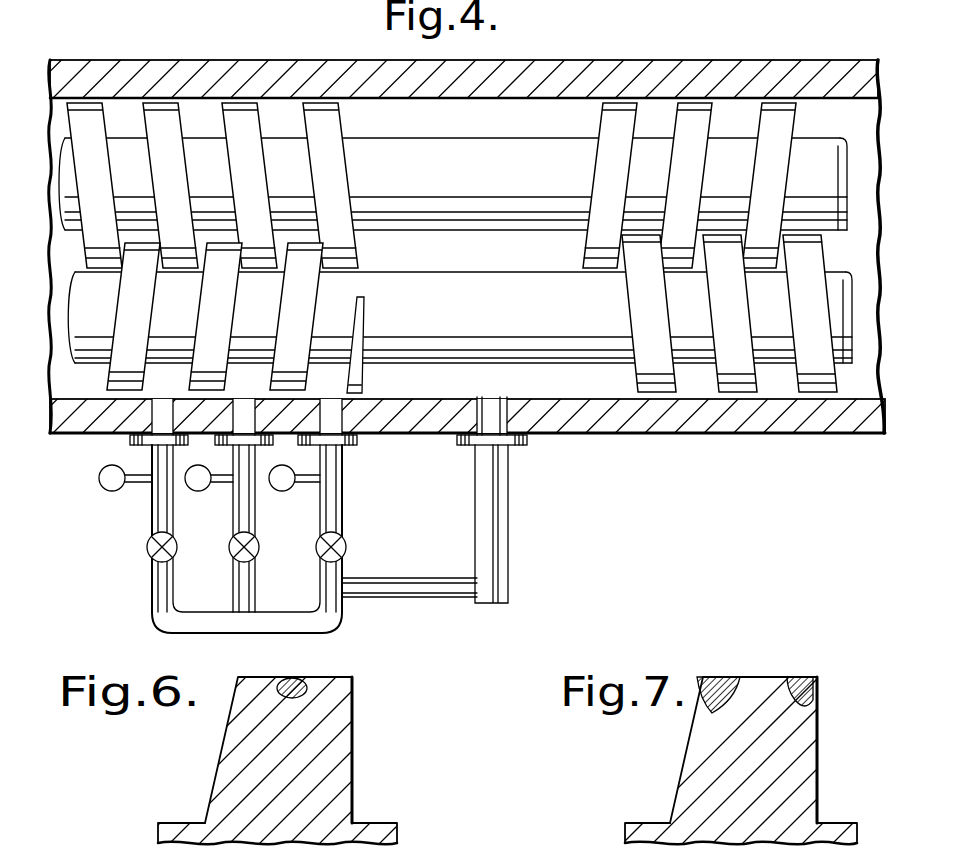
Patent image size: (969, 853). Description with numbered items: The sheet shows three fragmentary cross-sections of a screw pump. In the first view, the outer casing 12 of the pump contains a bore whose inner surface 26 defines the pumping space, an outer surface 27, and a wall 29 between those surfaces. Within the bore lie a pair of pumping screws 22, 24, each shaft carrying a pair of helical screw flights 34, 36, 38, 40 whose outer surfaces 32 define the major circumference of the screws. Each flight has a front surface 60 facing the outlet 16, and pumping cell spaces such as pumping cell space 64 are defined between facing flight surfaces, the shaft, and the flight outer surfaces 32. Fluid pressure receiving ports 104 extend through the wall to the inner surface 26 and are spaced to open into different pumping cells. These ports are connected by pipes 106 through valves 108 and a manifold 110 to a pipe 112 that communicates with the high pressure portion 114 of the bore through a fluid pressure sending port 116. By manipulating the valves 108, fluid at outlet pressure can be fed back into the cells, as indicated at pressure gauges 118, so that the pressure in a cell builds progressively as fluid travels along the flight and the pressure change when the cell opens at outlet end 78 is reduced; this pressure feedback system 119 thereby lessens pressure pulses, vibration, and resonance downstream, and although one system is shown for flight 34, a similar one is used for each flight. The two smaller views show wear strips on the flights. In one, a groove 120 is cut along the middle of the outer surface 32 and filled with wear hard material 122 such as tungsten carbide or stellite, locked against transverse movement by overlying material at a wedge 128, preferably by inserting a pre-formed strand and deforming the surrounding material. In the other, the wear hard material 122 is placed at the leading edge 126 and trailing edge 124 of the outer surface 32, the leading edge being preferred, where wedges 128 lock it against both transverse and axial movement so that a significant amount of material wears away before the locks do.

In FIG. 4, the outer casing 12 is at (763, 445).
In FIG. 6, the outlet 16 is at (89, 844).
In FIG. 4, the pumping screw 22 is at (571, 332).
In FIG. 6, the pumping screw 22 is at (380, 822).
In FIG. 7, the pumping screw 22 is at (833, 823).
In FIG. 4, the pumping screw 24 is at (548, 132).
In FIG. 4, the inner surface 26 is at (505, 108).
In FIG. 4, the outer surface 27 is at (425, 437).
In FIG. 4, the wall 29 is at (630, 420).
In FIG. 6, the outer surface 32 is at (372, 676).
In FIG. 7, the outer surface 32 is at (742, 665).
In FIG. 4, the helical screw flight 34 is at (133, 293).
In FIG. 4, the helical screw flight 36 is at (237, 115).
In FIG. 4, the helical screw flight 38 is at (728, 382).
In FIG. 4, the helical screw flight 40 is at (690, 117).
In FIG. 6, the front surface 60 is at (217, 770).
In FIG. 4, the pumping cell space 64 is at (117, 440).
In FIG. 4, the outlet end 78 is at (370, 334).
In FIG. 4, the fluid pressure receiving port 104 is at (163, 372).
In FIG. 4, the pipe 106 is at (330, 507).
In FIG. 4, the valve 108 is at (232, 532).
In FIG. 4, the manifold 110 is at (173, 618).
In FIG. 4, the pipe 112 is at (507, 513).
In FIG. 4, the high pressure portion 114 is at (522, 377).
In FIG. 4, the fluid pressure sending port 116 is at (492, 402).
In FIG. 4, the pressure gauge 118 is at (300, 500).
In FIG. 4, the pressure feedback system 119 is at (352, 572).
In FIG. 6, the groove 120 is at (228, 720).
In FIG. 6, the wear hard material 122 is at (287, 700).
In FIG. 7, the wear hard material 122 is at (705, 676).
In FIG. 7, the trailing edge 124 is at (698, 676).
In FIG. 7, the leading edge 126 is at (827, 673).
In FIG. 6, the wedge 128 is at (255, 678).
In FIG. 7, the wedge 128 is at (782, 677).